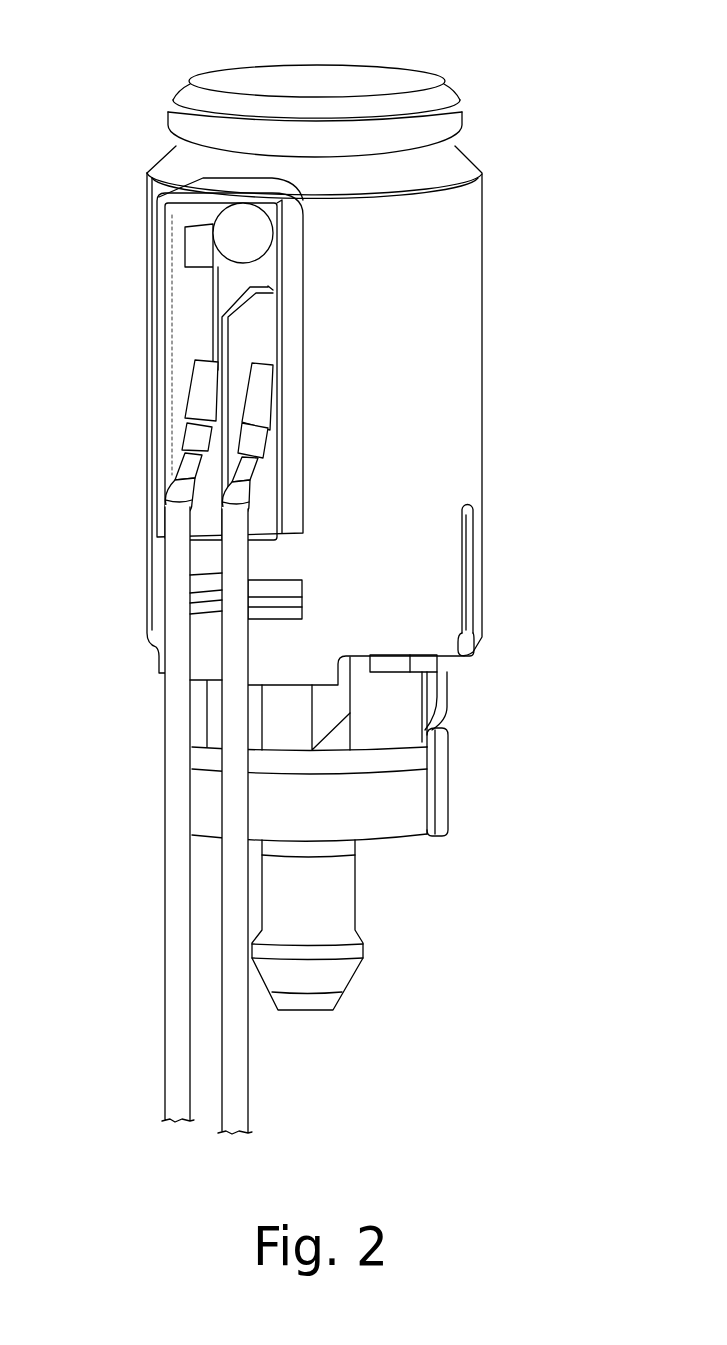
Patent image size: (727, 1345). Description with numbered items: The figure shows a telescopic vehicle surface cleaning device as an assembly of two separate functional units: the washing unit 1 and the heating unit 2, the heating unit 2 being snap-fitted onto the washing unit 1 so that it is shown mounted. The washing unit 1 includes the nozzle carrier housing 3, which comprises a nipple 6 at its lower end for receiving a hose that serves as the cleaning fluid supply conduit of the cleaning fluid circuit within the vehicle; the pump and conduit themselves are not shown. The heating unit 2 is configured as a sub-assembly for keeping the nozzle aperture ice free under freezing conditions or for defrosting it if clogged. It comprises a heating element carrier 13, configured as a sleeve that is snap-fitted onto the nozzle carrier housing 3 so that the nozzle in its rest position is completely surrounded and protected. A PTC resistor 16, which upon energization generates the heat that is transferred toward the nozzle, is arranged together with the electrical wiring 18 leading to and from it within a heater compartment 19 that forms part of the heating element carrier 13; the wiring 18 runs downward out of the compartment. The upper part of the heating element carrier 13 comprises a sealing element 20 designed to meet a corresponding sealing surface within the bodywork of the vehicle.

The washing unit 1 is at (335, 570).
The heating unit 2 is at (346, 378).
The nozzle carrier housing 3 is at (445, 782).
The nipple 6 is at (343, 915).
The heating element carrier 13 is at (482, 288).
The PTC resistor 16 is at (243, 222).
The electrical wiring 18 is at (235, 950).
The heater compartment 19 is at (200, 300).
The sealing element 20 is at (452, 128).